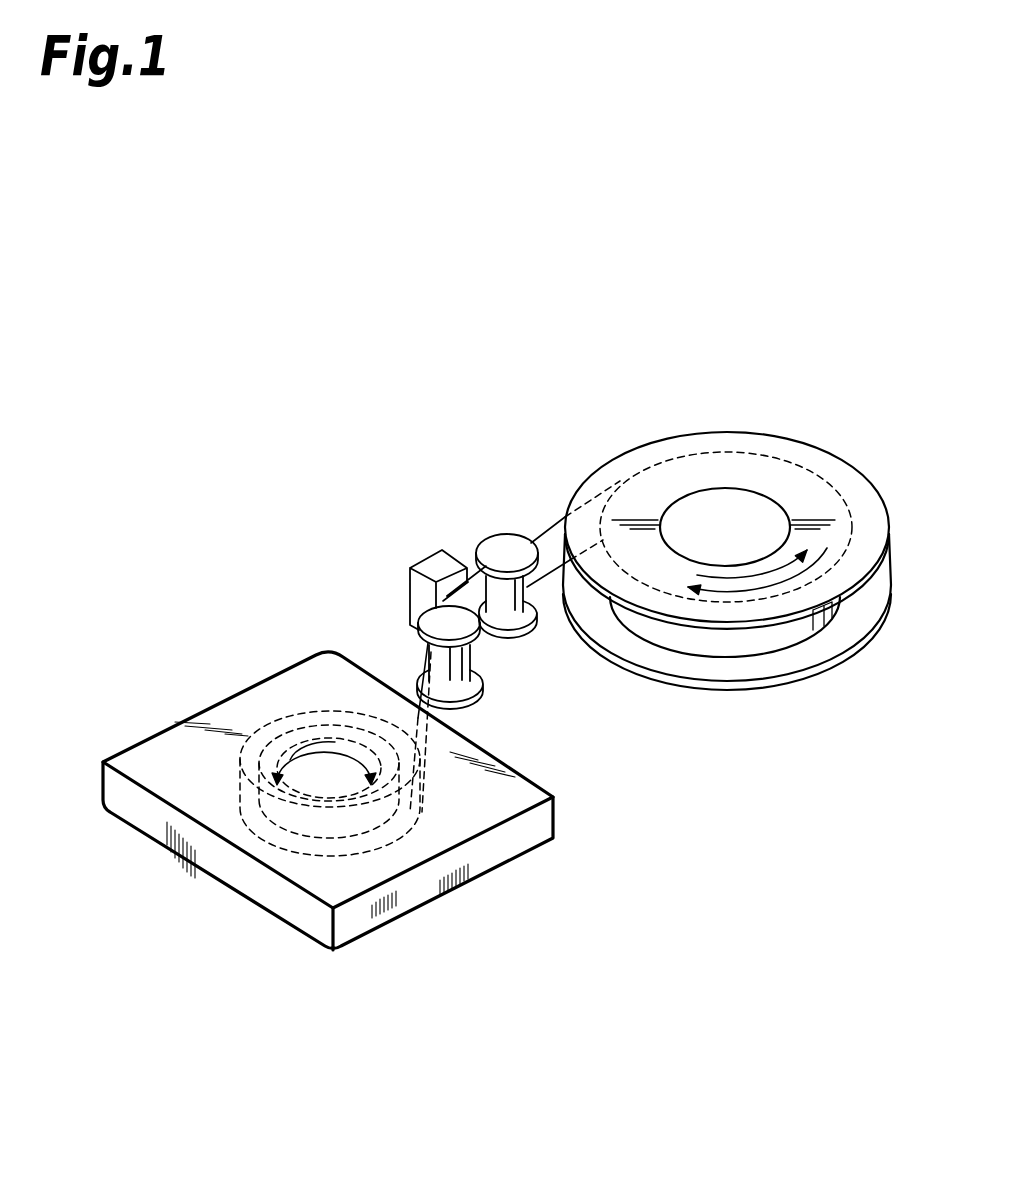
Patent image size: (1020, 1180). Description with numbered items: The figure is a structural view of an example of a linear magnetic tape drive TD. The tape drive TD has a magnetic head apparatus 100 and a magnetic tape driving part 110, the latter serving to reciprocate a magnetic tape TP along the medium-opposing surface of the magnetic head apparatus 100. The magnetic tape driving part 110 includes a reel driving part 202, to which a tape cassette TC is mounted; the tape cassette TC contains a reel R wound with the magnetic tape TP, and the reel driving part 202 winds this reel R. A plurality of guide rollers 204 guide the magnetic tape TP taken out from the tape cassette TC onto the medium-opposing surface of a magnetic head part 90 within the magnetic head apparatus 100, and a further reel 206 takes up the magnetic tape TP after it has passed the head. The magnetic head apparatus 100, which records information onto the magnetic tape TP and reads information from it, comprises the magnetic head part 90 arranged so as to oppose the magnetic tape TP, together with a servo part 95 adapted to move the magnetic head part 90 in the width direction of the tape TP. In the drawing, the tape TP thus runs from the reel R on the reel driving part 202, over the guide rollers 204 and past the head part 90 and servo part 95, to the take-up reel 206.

The linear magnetic tape drive TD is at (333, 362).
The magnetic head apparatus 100 is at (405, 460).
The magnetic tape driving part 110 is at (483, 411).
The reel 206 is at (742, 440).
The magnetic tape TP is at (540, 536).
The magnetic head part 90 is at (470, 578).
The servo part 95 is at (435, 568).
The guide rollers 204 is at (508, 628).
The reel driving part 202 is at (292, 818).
The reel R is at (298, 712).
The tape cassette TC is at (498, 858).